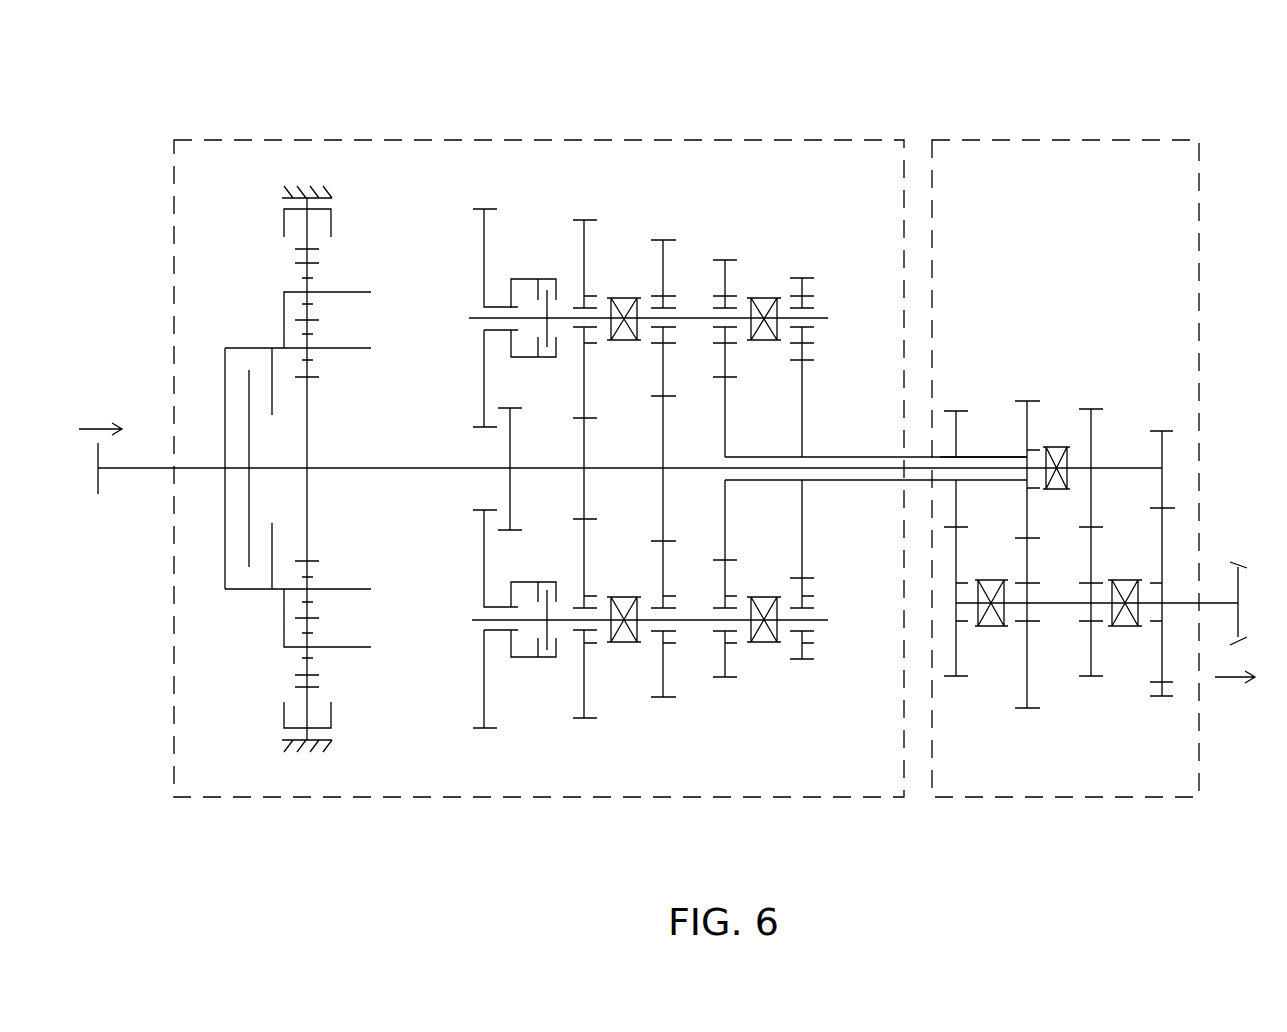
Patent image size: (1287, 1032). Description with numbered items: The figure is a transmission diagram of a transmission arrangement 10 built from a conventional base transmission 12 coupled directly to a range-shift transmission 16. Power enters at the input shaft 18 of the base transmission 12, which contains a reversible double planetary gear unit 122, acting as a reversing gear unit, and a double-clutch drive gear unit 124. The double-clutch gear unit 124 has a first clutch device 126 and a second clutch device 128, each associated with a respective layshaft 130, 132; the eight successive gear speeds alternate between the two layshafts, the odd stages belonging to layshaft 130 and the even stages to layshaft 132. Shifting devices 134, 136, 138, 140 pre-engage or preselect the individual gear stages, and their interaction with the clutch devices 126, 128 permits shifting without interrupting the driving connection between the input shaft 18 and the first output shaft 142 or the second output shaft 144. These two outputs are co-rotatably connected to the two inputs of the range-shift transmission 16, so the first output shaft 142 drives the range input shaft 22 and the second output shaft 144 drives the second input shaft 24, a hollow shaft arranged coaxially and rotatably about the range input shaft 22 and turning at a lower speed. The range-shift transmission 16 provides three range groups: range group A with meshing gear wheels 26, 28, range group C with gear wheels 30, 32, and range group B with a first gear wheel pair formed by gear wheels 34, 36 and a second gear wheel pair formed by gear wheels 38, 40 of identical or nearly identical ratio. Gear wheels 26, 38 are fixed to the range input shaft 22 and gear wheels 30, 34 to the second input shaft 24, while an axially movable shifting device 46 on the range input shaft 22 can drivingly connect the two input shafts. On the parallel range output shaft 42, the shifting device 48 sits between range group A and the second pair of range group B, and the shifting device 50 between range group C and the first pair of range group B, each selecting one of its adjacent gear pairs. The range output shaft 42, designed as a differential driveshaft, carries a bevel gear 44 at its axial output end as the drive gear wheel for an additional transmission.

The transmission arrangement 10 is at (784, 56).
The base transmission 12 is at (509, 124).
The range-shift transmission 16 is at (1047, 116).
The input shaft 18 is at (115, 470).
The range input shaft 22 is at (975, 480).
The second input shaft 24 is at (945, 457).
The gear wheel 26 is at (1162, 449).
The gear wheel 28 is at (1162, 524).
The gear wheel 30 is at (1028, 418).
The gear wheel 32 is at (1030, 552).
The gear wheel 34 is at (958, 435).
The gear wheel 36 is at (958, 552).
The gear wheel 38 is at (1093, 440).
The gear wheel 40 is at (1093, 545).
The range output shaft 42 is at (1075, 603).
The bevel gear 44 is at (1237, 565).
The shifting device 46 is at (1058, 440).
The shifting device 48 is at (1125, 627).
The shifting device 50 is at (993, 627).
The reversible double planetary gear unit 122 is at (318, 152).
The double-clutch drive gear unit 124 is at (674, 199).
The first clutch device 126 is at (517, 280).
The second clutch device 128 is at (520, 652).
The layshaft 130 is at (470, 318).
The layshaft 132 is at (472, 620).
The shifting device 134 is at (768, 298).
The shifting device 136 is at (620, 300).
The shifting device 138 is at (767, 645).
The shifting device 140 is at (630, 645).
The first output shaft 142 is at (887, 480).
The second output shaft 144 is at (820, 455).